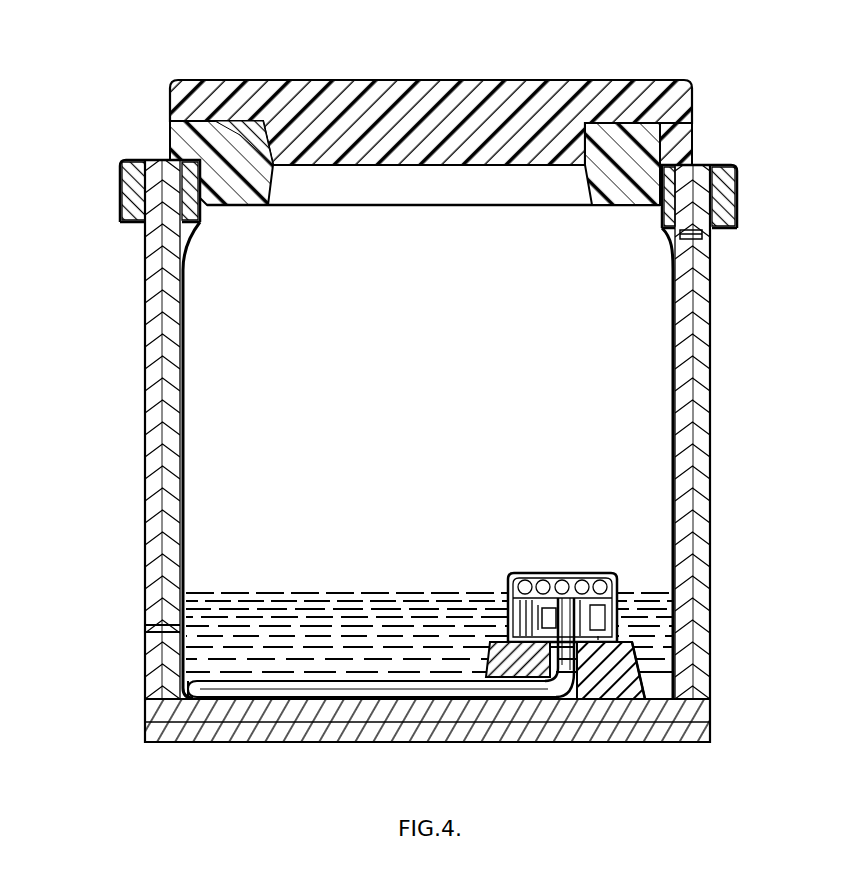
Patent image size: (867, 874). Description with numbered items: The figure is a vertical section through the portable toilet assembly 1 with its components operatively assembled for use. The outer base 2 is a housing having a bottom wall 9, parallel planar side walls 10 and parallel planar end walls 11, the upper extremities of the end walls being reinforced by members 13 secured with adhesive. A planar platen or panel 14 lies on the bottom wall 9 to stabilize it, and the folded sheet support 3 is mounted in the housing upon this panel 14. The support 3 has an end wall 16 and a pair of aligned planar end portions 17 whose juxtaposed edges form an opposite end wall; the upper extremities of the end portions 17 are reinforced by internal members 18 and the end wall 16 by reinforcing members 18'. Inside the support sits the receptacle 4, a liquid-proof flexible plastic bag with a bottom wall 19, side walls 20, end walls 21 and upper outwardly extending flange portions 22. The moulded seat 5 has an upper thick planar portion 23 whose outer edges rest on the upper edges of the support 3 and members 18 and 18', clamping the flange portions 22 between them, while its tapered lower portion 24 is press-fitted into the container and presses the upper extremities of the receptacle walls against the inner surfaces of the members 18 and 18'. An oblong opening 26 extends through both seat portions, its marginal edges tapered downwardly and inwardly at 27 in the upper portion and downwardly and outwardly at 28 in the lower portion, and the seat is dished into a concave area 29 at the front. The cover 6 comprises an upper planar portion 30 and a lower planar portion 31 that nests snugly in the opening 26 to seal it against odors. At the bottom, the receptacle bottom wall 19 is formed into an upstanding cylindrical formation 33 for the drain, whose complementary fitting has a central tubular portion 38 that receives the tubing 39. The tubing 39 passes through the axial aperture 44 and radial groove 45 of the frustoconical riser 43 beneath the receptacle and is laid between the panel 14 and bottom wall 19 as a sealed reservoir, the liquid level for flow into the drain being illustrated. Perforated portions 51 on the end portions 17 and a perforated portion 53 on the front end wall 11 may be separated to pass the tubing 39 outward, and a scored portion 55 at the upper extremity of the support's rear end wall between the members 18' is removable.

The assembly 1 is at (94, 80).
The base 2 is at (711, 553).
The support 3 is at (686, 379).
The receptacle 4 is at (641, 453).
The seat 5 is at (170, 131).
The cover 6 is at (179, 80).
The bottom wall 9 is at (577, 726).
The side walls 10 is at (185, 227).
The end walls 11 is at (150, 467).
The members 13 is at (140, 220).
The panel 14 is at (196, 700).
The end wall 16 is at (686, 413).
The end portions 17 is at (170, 427).
The internal members 18 is at (222, 236).
The reinforcing members 18' is at (732, 160).
The bottom wall 19 is at (315, 677).
The side walls 20 is at (645, 302).
The end walls 21 is at (184, 378).
The flange portions 22 is at (120, 198).
The upper portion 23 is at (678, 147).
The lower portion 24 is at (610, 200).
The opening 26 is at (447, 165).
The tapered marginal edges 27 is at (585, 150).
The tapered marginal edges 28 is at (388, 200).
The concave area 29 is at (242, 136).
The upper portion 30 is at (659, 90).
The lower portion 31 is at (343, 158).
The cylindrical formation 33 is at (600, 632).
The central tubular portion 38 is at (575, 670).
The tubing 39 is at (376, 690).
The riser 43 is at (621, 691).
The axial aperture 44 is at (583, 673).
The radial groove 45 is at (514, 677).
The portions 51 is at (173, 661).
The portion 53 is at (150, 697).
The portion 55 is at (712, 233).